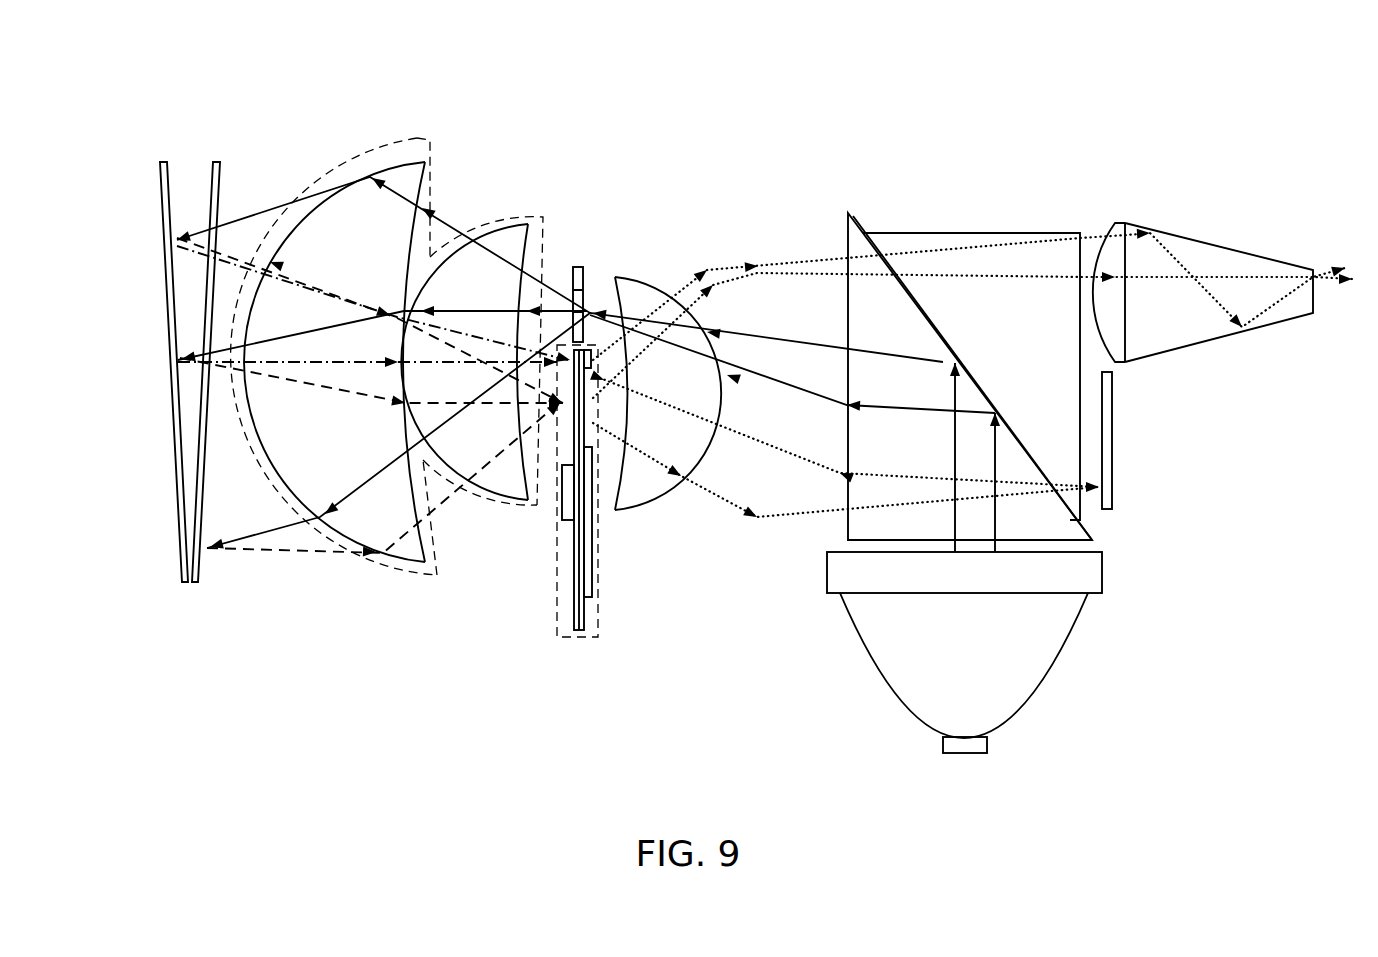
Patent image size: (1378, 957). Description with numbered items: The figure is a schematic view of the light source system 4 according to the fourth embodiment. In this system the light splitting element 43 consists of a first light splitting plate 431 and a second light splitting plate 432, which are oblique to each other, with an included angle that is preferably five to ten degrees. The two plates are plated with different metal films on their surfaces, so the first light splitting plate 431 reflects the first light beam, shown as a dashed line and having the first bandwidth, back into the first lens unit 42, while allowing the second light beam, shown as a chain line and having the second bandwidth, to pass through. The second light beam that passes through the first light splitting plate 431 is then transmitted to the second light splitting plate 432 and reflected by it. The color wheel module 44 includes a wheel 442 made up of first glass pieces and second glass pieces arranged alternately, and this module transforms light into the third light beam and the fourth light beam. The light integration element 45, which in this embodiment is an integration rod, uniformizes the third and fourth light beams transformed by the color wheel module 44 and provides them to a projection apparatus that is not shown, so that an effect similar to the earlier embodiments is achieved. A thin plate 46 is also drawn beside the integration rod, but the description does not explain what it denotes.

The light source system 4 is at (397, 100).
The first lens unit 42 is at (512, 208).
The light splitting element 43 is at (262, 86).
The first light splitting plate 431 is at (218, 160).
The second light splitting plate 432 is at (163, 160).
The color wheel module 44 is at (580, 640).
The wheel 442 is at (585, 597).
The light integration element 45 is at (1228, 248).
The light sensor plate 46 is at (1113, 497).